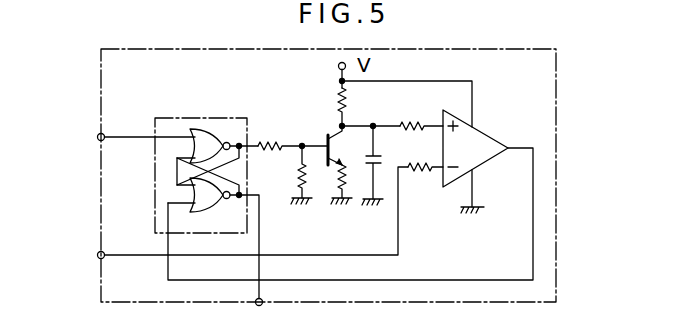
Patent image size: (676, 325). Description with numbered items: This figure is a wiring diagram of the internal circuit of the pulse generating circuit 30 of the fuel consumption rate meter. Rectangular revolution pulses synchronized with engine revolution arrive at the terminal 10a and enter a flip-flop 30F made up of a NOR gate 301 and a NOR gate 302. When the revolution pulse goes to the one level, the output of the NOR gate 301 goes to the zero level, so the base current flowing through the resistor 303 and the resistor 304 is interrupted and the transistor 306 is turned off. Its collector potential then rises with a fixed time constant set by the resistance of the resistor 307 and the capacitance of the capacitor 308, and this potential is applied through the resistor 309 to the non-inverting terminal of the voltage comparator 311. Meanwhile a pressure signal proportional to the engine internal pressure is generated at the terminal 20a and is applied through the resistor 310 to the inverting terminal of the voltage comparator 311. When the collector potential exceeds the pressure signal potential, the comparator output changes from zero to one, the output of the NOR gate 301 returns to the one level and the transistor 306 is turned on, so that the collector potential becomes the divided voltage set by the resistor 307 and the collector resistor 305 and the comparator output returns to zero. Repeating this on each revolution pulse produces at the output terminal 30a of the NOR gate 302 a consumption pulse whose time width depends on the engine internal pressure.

The terminal 10a is at (97, 134).
The terminal 20a is at (97, 255).
The output terminal 30a is at (259, 306).
The pulse generating circuit 30 is at (556, 122).
The flip-flop 30F is at (172, 117).
The NOR gate 301 is at (216, 132).
The NOR gate 302 is at (197, 207).
The resistor 303 is at (267, 140).
The resistor 304 is at (298, 183).
The collector resistor 305 is at (331, 177).
The transistor 306 is at (336, 134).
The resistor 307 is at (350, 100).
The capacitor 308 is at (384, 166).
The resistor 309 is at (420, 122).
The resistor 310 is at (422, 172).
The voltage comparator 311 is at (504, 142).